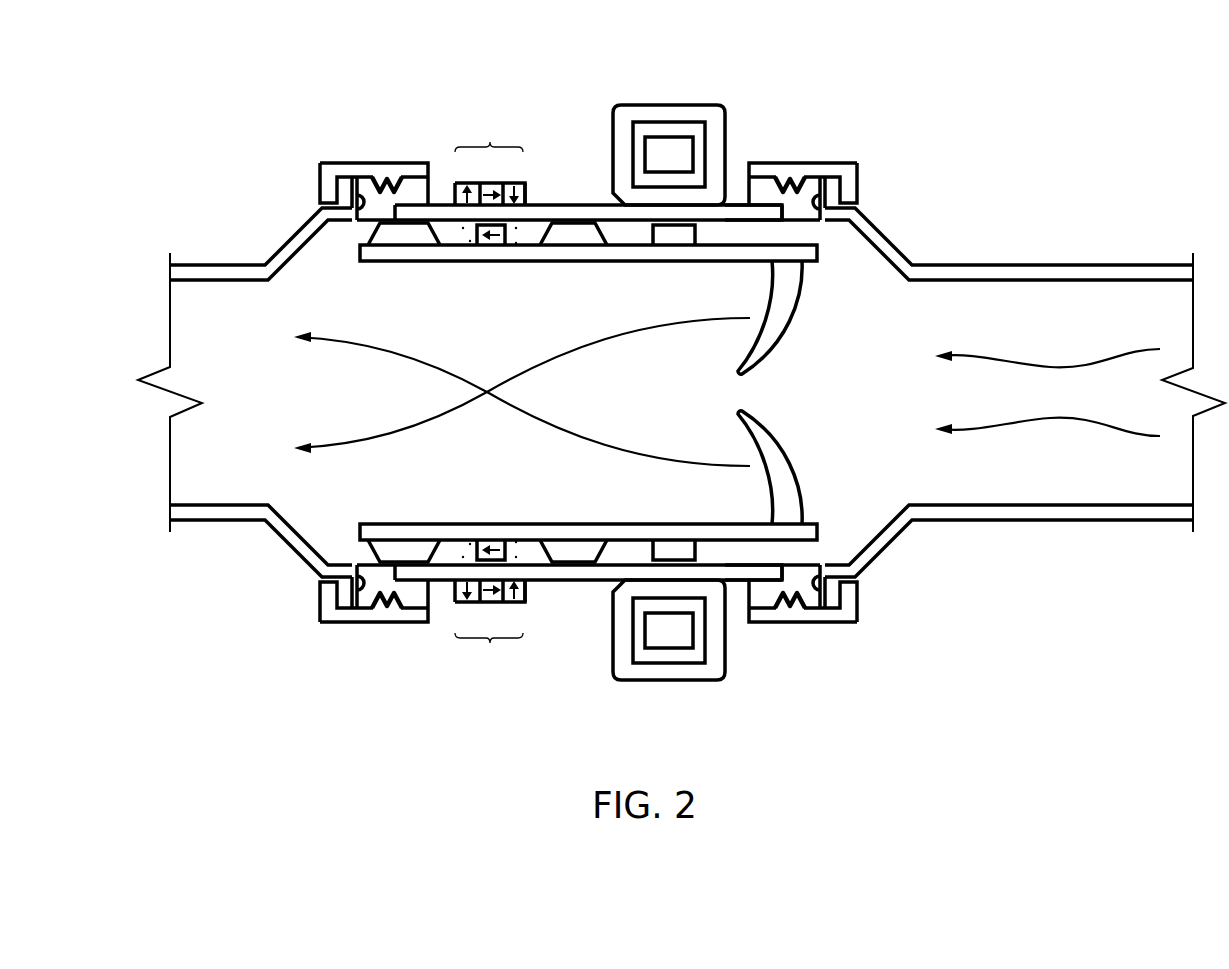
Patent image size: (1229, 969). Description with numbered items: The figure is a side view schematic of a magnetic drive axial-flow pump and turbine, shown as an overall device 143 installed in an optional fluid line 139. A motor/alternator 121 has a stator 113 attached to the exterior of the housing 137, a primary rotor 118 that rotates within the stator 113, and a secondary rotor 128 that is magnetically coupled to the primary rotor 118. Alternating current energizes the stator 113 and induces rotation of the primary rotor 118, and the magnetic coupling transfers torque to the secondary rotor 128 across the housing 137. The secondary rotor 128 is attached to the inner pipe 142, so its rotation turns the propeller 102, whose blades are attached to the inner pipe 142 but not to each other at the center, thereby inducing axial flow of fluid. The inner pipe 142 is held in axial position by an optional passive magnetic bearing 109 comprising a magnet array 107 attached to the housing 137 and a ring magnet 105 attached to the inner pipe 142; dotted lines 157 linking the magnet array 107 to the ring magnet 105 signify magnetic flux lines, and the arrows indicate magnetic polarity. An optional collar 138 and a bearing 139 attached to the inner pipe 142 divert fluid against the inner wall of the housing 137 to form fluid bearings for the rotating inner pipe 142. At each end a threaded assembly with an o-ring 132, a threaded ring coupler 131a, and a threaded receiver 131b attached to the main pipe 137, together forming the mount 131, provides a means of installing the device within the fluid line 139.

The propeller 102 is at (770, 337).
The ring magnet 105 is at (490, 246).
The magnet array 107 is at (518, 183).
The passive magnetic bearing 109 is at (490, 393).
The stator 113 is at (713, 115).
The primary rotor 118 is at (655, 137).
The motor/alternator 121 is at (722, 62).
The secondary rotor 128 is at (671, 240).
The mounting plate 131 is at (560, 207).
The threaded ring coupler 131a is at (330, 162).
The threaded receiver 131b is at (388, 183).
The o-ring 132 is at (348, 222).
The housing 137 is at (728, 208).
The collar 138 is at (567, 240).
The bearing 139 is at (207, 264).
The inner pipe 142 is at (443, 262).
The flow sensing system 143 is at (214, 141).
The magnetic flux lines 157 is at (466, 232).